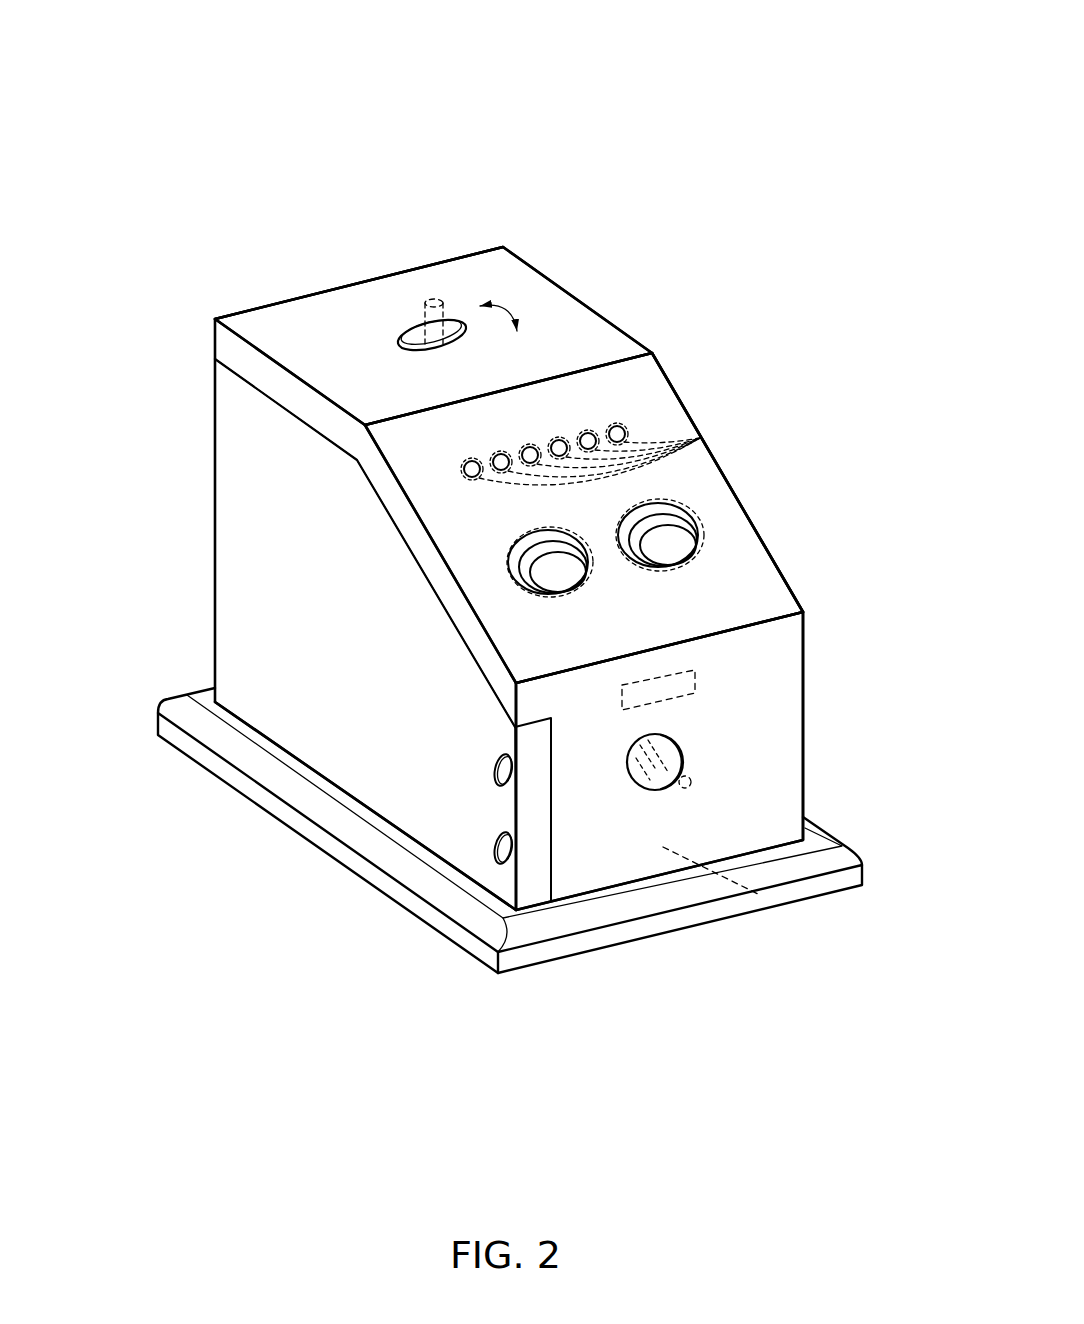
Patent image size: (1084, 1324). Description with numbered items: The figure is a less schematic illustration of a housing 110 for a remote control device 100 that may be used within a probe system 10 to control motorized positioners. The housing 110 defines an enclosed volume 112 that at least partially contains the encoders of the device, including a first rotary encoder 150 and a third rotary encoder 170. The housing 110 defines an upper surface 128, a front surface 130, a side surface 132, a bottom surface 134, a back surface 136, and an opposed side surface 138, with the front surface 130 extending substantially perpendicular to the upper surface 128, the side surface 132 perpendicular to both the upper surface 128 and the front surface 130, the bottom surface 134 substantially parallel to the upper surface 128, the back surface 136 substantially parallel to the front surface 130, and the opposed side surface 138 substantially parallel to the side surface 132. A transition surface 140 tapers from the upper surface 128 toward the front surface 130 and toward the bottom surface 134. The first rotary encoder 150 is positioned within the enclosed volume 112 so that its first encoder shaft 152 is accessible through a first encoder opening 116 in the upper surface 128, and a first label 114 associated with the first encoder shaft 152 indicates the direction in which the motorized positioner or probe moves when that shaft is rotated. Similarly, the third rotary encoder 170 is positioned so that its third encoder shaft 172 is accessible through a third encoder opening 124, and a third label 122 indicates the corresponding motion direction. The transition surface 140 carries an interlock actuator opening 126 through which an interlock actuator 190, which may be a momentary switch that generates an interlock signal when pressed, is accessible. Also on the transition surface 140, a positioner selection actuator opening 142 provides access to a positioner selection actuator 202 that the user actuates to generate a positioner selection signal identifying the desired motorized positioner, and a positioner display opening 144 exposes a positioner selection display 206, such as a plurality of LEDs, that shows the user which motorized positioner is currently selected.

The probe system 10 is at (114, 52).
The remote control device 100 is at (130, 95).
The housing 110 is at (187, 585).
The enclosed volume 112 is at (425, 713).
The first label 114 is at (503, 293).
The first encoder opening 116 is at (417, 340).
The third label 122 is at (700, 702).
The third encoder opening 124 is at (663, 742).
The interlock actuator opening 126 is at (523, 567).
The upper surface 128 is at (277, 328).
The front surface 130 is at (585, 863).
The side surface 132 is at (760, 532).
The bottom surface 134 is at (360, 877).
The back surface 136 is at (215, 460).
The opposed side surface 138 is at (297, 650).
The transition surface 140 is at (653, 395).
The positioner selection actuator opening 142 is at (658, 548).
The positioner display opening 144 is at (589, 388).
The first rotary encoder 150 is at (317, 317).
The first encoder shaft 152 is at (437, 300).
The third rotary encoder 170 is at (657, 792).
The third encoder shaft 172 is at (685, 792).
The interlock actuator 190 is at (510, 560).
The positioner selection actuator 202 is at (690, 572).
The positioner selection display 206 is at (702, 437).